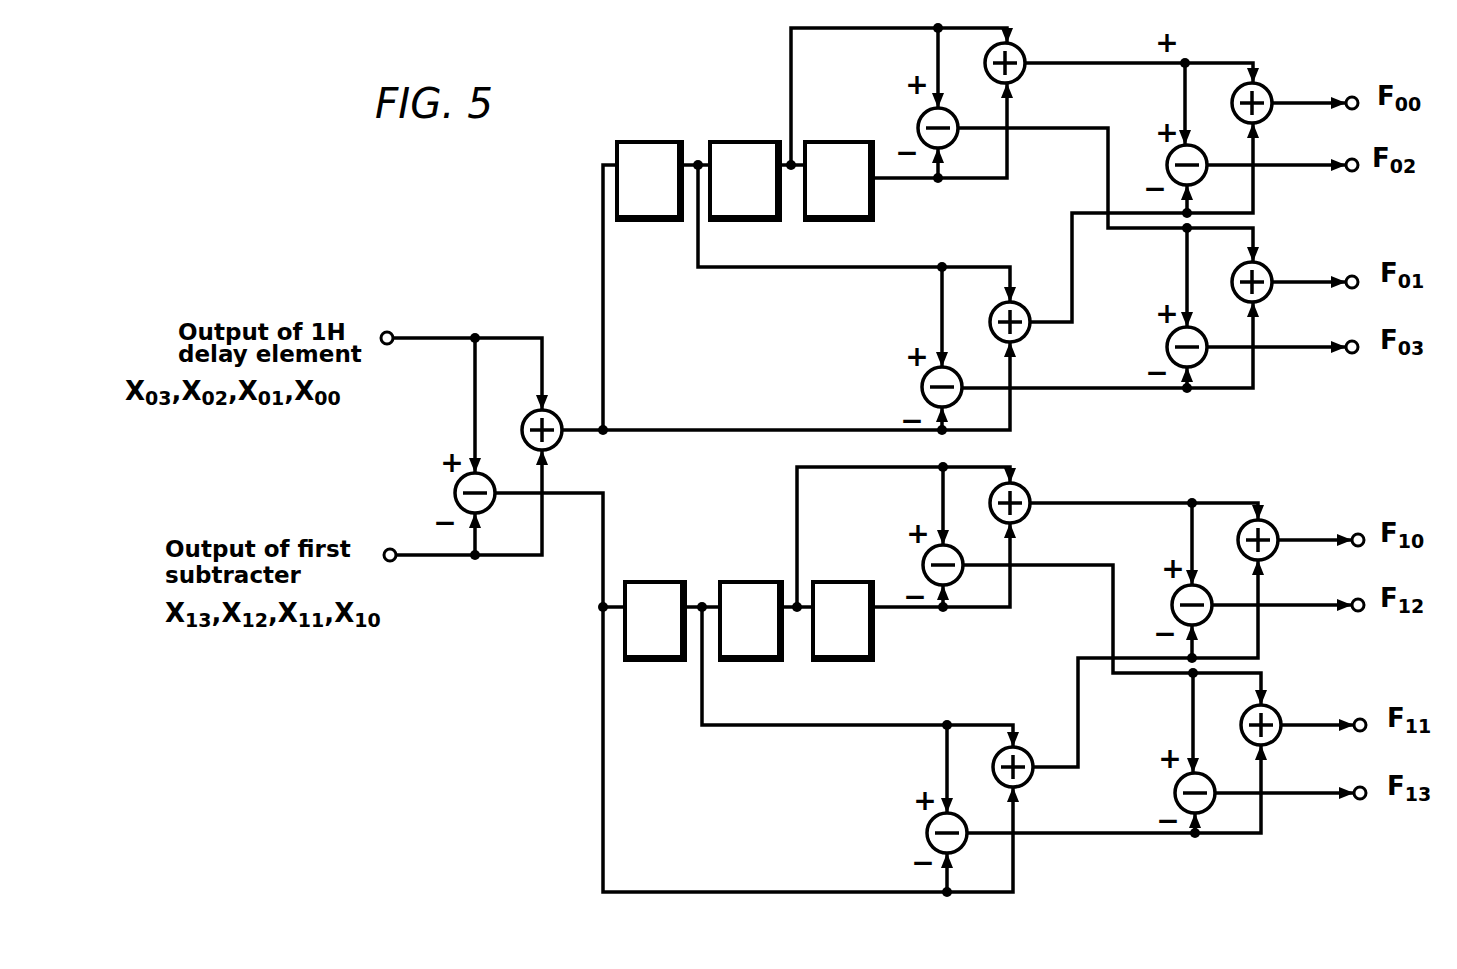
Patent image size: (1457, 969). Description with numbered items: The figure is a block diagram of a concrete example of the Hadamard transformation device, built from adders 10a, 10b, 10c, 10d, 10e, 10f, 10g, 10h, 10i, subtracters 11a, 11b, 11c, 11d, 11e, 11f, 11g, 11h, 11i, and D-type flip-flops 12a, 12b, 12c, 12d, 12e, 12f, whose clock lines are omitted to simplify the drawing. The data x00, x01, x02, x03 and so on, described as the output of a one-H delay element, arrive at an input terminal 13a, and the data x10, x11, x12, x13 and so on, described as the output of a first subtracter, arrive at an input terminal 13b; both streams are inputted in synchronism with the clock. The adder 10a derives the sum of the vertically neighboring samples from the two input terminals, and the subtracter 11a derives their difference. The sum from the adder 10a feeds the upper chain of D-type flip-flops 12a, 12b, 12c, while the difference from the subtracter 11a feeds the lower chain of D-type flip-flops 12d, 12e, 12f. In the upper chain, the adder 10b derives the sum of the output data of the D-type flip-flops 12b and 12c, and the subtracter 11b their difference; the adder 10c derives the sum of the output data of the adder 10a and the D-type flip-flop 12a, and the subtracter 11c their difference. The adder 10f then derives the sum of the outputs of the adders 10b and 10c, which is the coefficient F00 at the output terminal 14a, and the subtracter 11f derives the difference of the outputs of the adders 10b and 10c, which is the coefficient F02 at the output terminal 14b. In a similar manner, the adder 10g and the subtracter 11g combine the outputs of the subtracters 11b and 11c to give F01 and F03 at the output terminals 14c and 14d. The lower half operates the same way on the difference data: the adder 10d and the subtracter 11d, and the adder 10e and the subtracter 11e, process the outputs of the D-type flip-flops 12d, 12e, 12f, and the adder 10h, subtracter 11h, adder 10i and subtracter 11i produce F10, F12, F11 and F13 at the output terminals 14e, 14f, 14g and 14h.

The adder 10a is at (556, 412).
The adder 10b is at (1019, 49).
The adder 10c is at (1024, 337).
The adder 10d is at (1026, 487).
The adder 10e is at (1027, 782).
The adder 10f is at (1265, 118).
The adder 10g is at (1267, 297).
The adder 10h is at (1273, 555).
The adder 10i is at (1276, 742).
The subtracter 11a is at (454, 494).
The subtracter 11b is at (919, 118).
The subtracter 11c is at (923, 385).
The subtracter 11d is at (924, 560).
The subtracter 11e is at (928, 828).
The subtracter 11f is at (1168, 156).
The subtracter 11g is at (1168, 341).
The subtracter 11h is at (1173, 596).
The subtracter 11i is at (1176, 784).
The D-type flip-flop 12a is at (627, 222).
The D-type flip-flop 12b is at (737, 222).
The D-type flip-flop 12c is at (827, 222).
The D-type flip-flop 12d is at (638, 662).
The D-type flip-flop 12e is at (740, 662).
The D-type flip-flop 12f is at (838, 662).
The input terminal 13a is at (393, 332).
The input terminal 13b is at (390, 549).
The output terminal 14a is at (1352, 97).
The output terminal 14b is at (1352, 171).
The output terminal 14c is at (1353, 276).
The output terminal 14d is at (1353, 353).
The output terminal 14e is at (1358, 534).
The output terminal 14f is at (1358, 611).
The output terminal 14g is at (1360, 719).
The output terminal 14h is at (1360, 799).